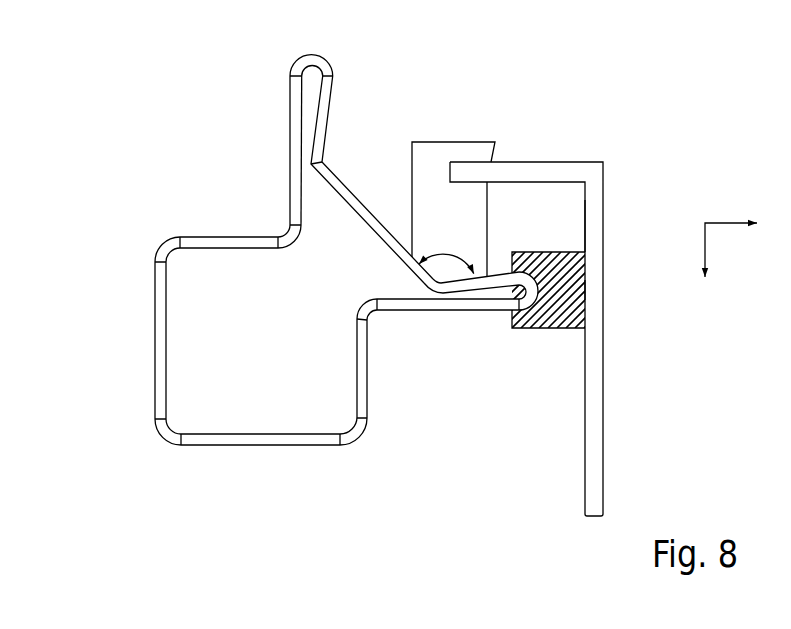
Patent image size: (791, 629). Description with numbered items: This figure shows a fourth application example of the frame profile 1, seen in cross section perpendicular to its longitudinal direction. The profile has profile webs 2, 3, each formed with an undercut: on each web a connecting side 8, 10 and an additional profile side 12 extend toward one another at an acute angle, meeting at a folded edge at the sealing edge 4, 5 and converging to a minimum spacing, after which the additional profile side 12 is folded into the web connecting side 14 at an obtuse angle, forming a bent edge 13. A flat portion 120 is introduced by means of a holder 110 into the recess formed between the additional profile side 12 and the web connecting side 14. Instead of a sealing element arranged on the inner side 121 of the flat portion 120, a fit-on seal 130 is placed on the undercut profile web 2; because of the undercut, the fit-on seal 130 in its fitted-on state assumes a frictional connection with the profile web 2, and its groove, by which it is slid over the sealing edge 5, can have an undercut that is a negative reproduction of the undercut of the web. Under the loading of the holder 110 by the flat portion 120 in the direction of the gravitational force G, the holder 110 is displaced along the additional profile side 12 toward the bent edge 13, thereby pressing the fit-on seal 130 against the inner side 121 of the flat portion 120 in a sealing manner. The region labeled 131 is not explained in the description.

The frame profile 1 is at (108, 326).
The profile web 2 is at (384, 202).
The profile web 3 is at (457, 300).
The sealing edge 4 is at (312, 53).
The sealing edge 5 is at (586, 290).
The connecting side 8 is at (290, 136).
The connecting side 10 is at (401, 312).
The additional profile side 12 is at (498, 275).
The bent edge 13 is at (481, 284).
The web connecting side 14 is at (345, 187).
The holder 110 is at (452, 142).
The flat portion 120 is at (561, 339).
The inner side 121 is at (586, 408).
The fit-on seal 130 is at (560, 329).
The upper edge of contact pad 131 is at (583, 237).
The gravitational force G is at (708, 252).